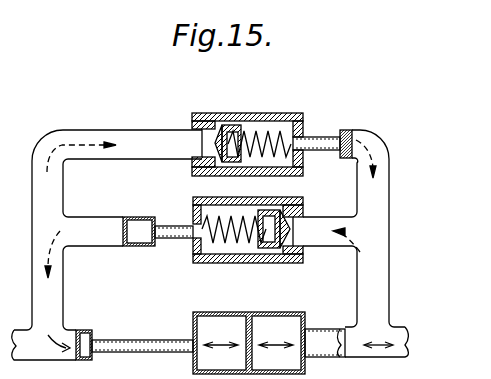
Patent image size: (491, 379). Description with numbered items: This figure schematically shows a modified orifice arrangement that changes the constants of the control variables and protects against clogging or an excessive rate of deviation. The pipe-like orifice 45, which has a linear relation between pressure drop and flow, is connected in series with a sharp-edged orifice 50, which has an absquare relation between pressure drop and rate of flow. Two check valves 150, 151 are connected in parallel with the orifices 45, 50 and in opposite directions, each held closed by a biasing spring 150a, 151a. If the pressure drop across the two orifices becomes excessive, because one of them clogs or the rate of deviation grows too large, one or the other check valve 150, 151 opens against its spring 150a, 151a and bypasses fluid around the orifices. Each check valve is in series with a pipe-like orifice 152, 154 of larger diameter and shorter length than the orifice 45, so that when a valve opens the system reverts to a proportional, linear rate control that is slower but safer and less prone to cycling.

The check valve 150 is at (200, 145).
The biasing spring 150a is at (266, 136).
The pipe-like orifice 152 is at (327, 133).
The check valve 151 is at (290, 233).
The biasing spring 151a is at (222, 242).
The pipe-like orifice 154 is at (171, 217).
The sharp-edged orifice 50 is at (253, 345).
The pipe-like orifice 45 is at (128, 340).